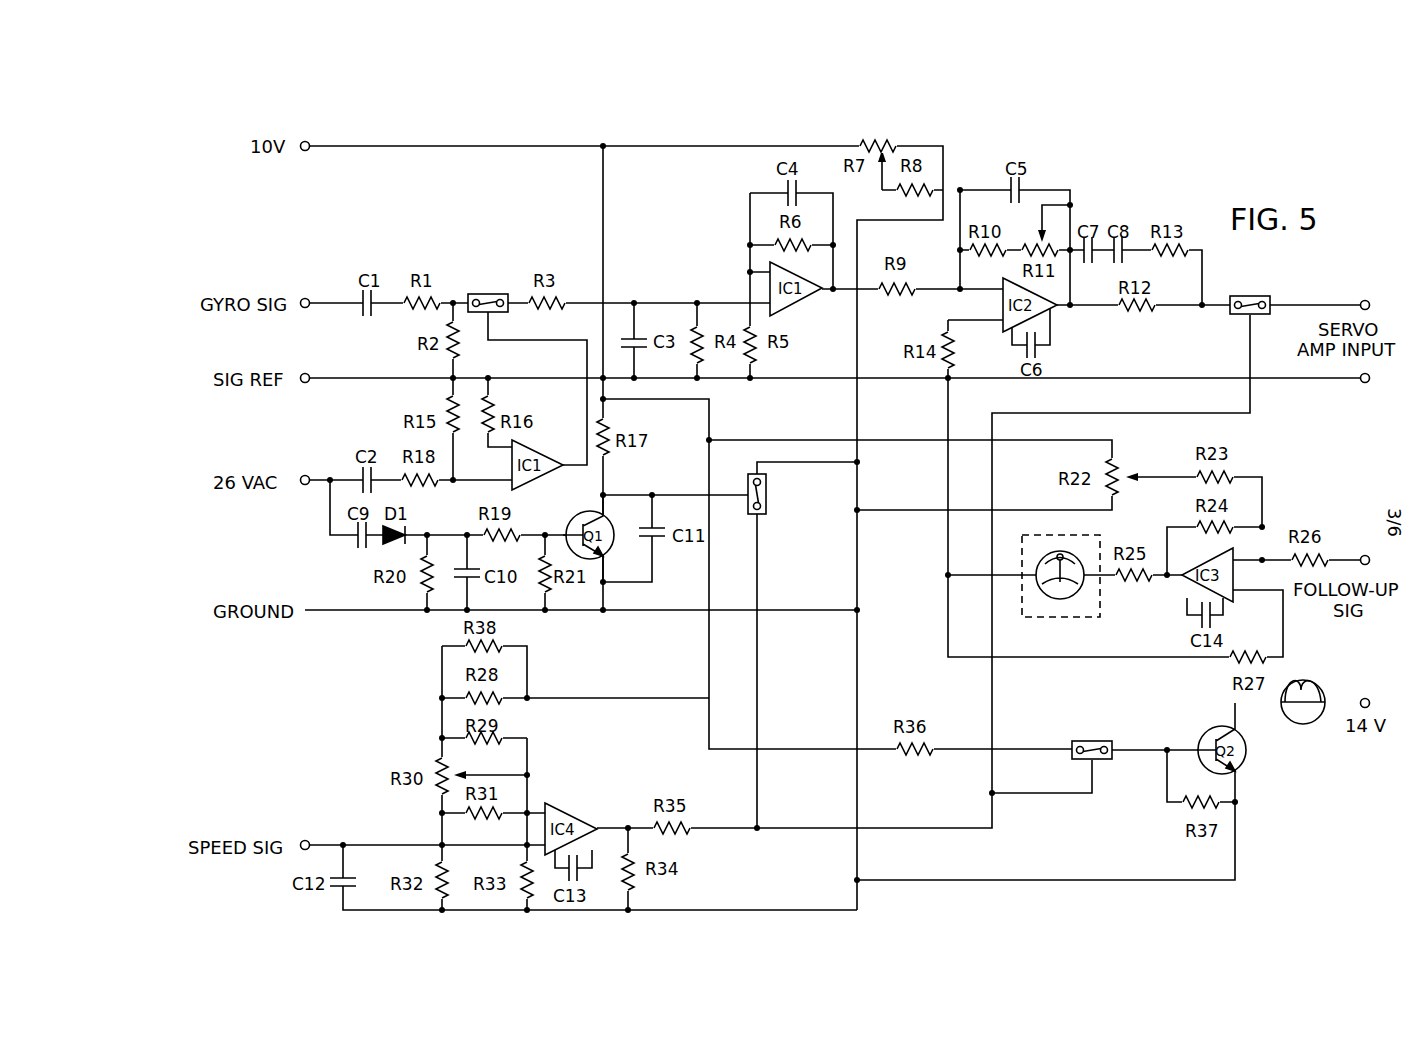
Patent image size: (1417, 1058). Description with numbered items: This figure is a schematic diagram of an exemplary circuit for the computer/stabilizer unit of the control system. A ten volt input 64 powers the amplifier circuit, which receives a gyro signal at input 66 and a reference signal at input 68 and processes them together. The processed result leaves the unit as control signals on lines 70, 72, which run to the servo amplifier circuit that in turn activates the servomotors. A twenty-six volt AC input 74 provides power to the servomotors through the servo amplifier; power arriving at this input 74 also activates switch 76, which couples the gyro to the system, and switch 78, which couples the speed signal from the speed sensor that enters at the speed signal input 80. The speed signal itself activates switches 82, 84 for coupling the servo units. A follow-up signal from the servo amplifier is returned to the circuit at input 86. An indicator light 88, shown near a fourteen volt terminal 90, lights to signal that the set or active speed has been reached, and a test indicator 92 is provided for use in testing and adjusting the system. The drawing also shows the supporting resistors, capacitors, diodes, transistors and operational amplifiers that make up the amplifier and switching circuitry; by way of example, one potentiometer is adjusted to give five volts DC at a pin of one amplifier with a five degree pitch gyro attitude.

The ten volt input 64 is at (306, 151).
The gyro signal input 66 is at (304, 298).
The reference signal input 68 is at (304, 373).
The control signal line 70 is at (1364, 300).
The control signal line 72 is at (1364, 383).
The 26 VAC input 74 is at (304, 475).
The switch 76 is at (489, 294).
The switch 78 is at (766, 497).
The speed signal input 80 is at (307, 840).
The switch 82 is at (1086, 740).
The switch 84 is at (1250, 295).
The follow-up signal input 86 is at (1364, 555).
The indicator light 88 is at (1311, 678).
The 14 V supply terminal 90 is at (1367, 698).
The test indicator 92 is at (1074, 618).